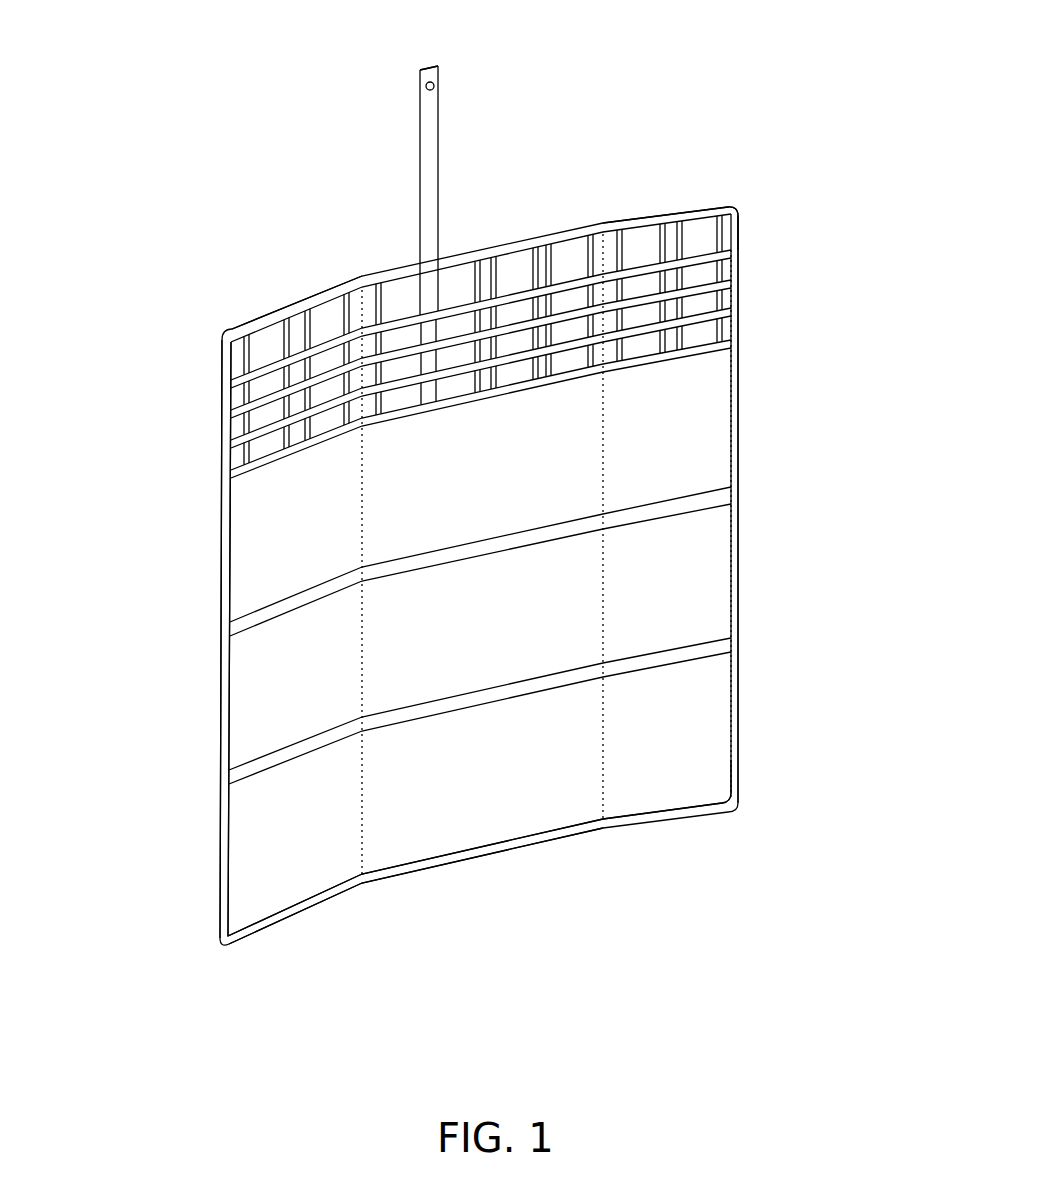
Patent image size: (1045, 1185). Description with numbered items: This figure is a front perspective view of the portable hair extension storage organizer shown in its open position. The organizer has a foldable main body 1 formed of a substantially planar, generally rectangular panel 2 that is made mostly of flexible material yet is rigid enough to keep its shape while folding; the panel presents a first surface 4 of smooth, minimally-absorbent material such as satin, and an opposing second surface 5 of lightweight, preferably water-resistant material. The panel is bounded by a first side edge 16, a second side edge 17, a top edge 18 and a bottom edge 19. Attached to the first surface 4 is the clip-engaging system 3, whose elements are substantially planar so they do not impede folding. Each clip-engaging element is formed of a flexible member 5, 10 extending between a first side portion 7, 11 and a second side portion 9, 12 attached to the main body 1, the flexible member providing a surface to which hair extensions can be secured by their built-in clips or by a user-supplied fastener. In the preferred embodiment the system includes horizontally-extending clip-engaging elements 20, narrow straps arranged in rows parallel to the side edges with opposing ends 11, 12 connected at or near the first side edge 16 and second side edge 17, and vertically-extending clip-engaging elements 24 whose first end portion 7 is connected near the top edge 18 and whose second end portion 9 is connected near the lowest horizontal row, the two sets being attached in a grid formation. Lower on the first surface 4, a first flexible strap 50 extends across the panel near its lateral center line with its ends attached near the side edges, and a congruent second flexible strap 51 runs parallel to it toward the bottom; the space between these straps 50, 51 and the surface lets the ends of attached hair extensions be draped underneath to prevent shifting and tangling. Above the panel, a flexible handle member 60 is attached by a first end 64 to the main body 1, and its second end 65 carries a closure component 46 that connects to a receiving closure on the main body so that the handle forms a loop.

The main body 1 is at (507, 882).
The rectangular panel 2 is at (698, 815).
The clip-engaging system 3 is at (485, 297).
The first surface 4 is at (690, 602).
The flexible member 5 is at (283, 362).
The first side portion 7 is at (698, 213).
The second side portion 9 is at (707, 357).
The flexible member 10 is at (700, 309).
The first side portion 11 is at (231, 390).
The second side portion 12 is at (745, 262).
The first side edge 16 is at (219, 855).
The second side edge 17 is at (740, 527).
The top edge 18 is at (325, 292).
The bottom edge 19 is at (395, 878).
The horizontally-extending clip-engaging elements 20 is at (231, 438).
The vertically-extending clip-engaging elements 24 is at (573, 236).
The closure component 46 is at (424, 88).
The first flexible strap 50 is at (230, 632).
The second flexible strap 51 is at (229, 781).
The flexible handle member 60 is at (428, 165).
The first end 64 is at (418, 262).
The second end 65 is at (438, 70).